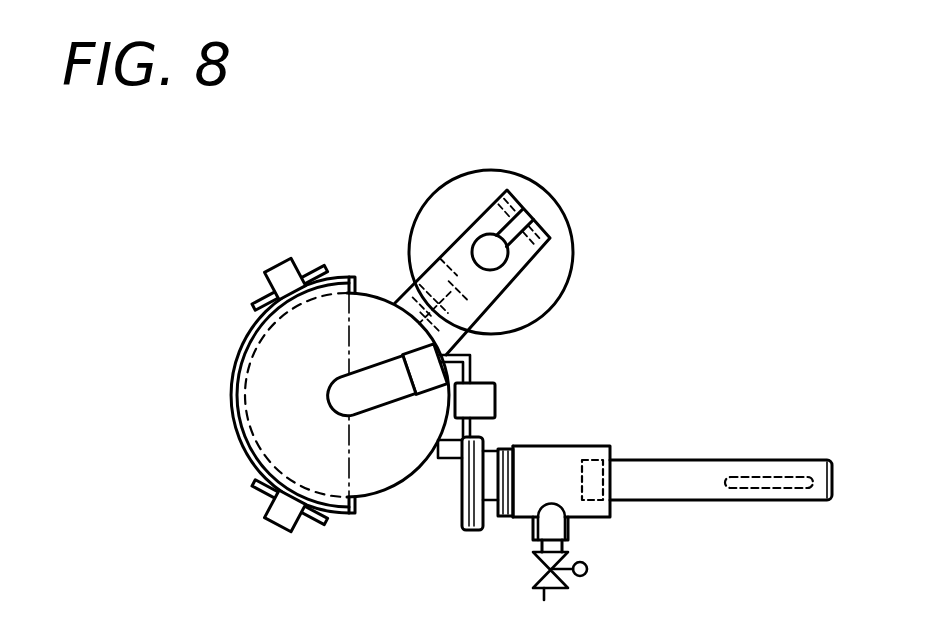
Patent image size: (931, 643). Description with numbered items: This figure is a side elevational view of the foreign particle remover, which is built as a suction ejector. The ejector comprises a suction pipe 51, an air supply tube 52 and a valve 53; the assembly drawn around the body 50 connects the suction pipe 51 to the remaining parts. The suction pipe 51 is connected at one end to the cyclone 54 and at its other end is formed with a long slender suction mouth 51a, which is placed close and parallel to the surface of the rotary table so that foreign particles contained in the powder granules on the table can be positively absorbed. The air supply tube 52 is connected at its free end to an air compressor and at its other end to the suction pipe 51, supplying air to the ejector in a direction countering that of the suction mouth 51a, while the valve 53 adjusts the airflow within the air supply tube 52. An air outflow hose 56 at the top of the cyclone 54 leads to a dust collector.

The air cylinder unit 50 is at (594, 443).
The suction pipe 51 is at (716, 473).
The suction mouth 51a is at (768, 490).
The air supply tube 52 is at (552, 595).
The valve 53 is at (568, 562).
The cyclone 54 is at (390, 470).
The air outflow hose 56 is at (383, 373).